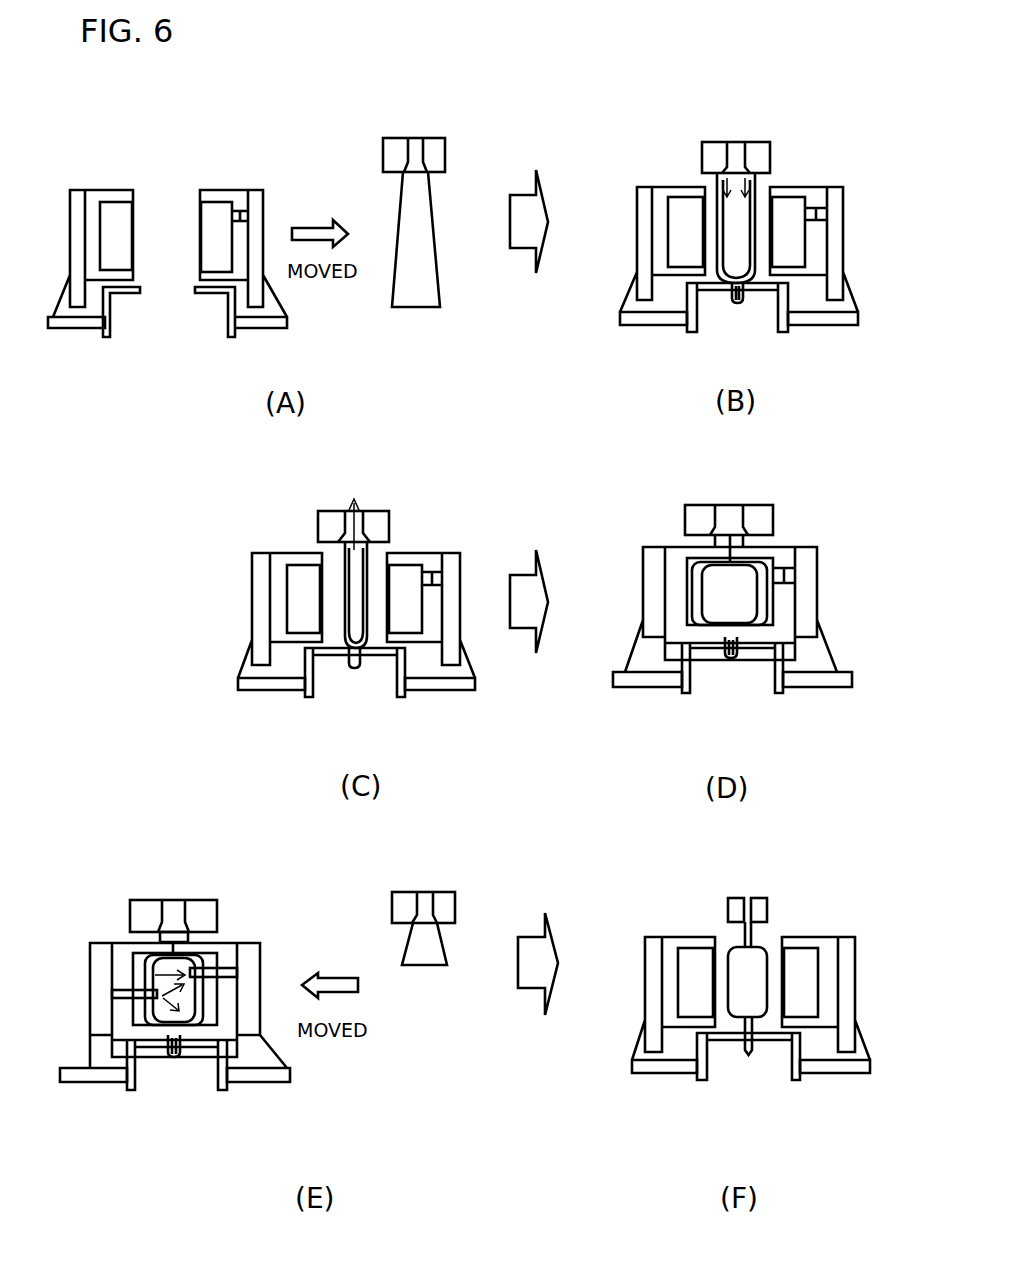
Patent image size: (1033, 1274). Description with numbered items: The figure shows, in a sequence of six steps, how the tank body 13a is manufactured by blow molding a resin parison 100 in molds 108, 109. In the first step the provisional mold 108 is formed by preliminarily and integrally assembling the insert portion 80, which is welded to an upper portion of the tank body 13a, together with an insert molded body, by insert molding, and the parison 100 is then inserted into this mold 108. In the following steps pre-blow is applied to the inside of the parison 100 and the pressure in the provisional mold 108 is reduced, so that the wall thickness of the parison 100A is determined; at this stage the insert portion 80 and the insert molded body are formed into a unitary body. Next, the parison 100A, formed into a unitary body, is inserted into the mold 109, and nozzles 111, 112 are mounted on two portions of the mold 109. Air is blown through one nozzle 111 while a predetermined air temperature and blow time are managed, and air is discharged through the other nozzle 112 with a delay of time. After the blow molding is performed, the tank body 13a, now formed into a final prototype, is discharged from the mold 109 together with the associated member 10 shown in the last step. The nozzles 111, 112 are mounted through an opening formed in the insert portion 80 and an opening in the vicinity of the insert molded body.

The holding member 10 is at (805, 988).
The tank body 13a is at (760, 975).
The insert portion 80 is at (238, 210).
The resin parison 100 is at (433, 280).
The parison 100A is at (762, 573).
The provisional mold 108 is at (120, 210).
The mold 109 is at (135, 967).
The nozzle 111 is at (120, 1003).
The nozzle 112 is at (232, 982).